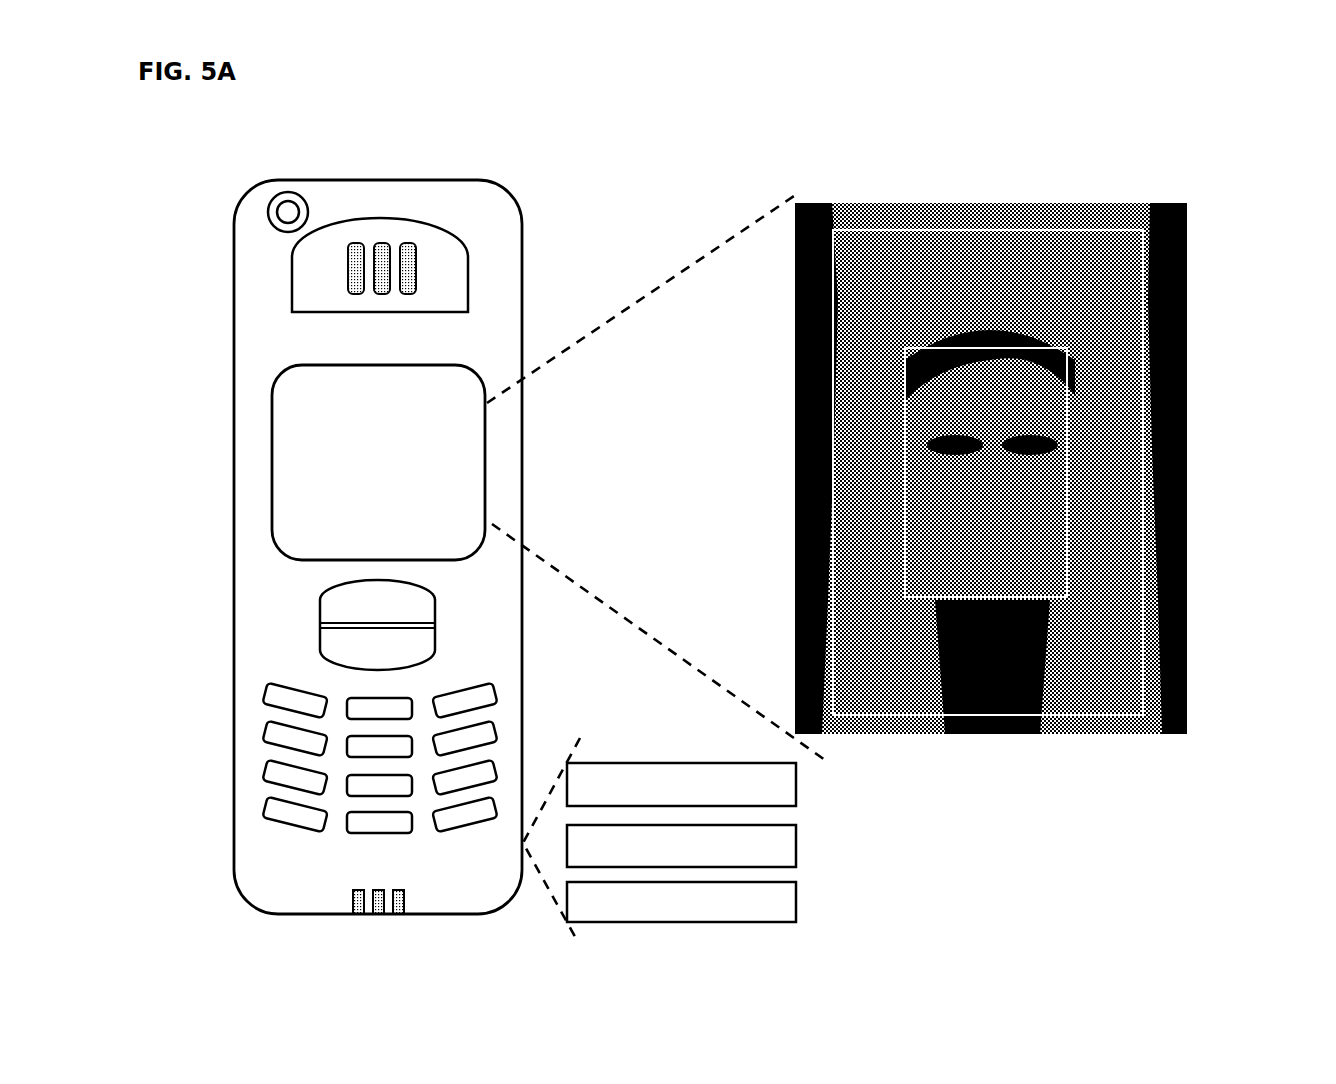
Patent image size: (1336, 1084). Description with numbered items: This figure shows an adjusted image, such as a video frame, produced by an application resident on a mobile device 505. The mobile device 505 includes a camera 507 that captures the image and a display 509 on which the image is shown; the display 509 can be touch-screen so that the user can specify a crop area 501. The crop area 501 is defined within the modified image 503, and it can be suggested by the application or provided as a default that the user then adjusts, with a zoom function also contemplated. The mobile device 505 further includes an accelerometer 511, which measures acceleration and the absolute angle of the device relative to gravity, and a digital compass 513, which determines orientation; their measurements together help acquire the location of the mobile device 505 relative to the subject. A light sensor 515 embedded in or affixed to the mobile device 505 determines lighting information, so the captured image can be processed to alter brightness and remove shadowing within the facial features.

The crop area 501 is at (1145, 285).
The modified image 503 is at (1190, 362).
The mobile device 505 is at (525, 232).
The camera 507 is at (302, 198).
The display 509 is at (272, 431).
The accelerometer 511 is at (796, 785).
The digital compass 513 is at (796, 845).
The light sensor 515 is at (796, 900).